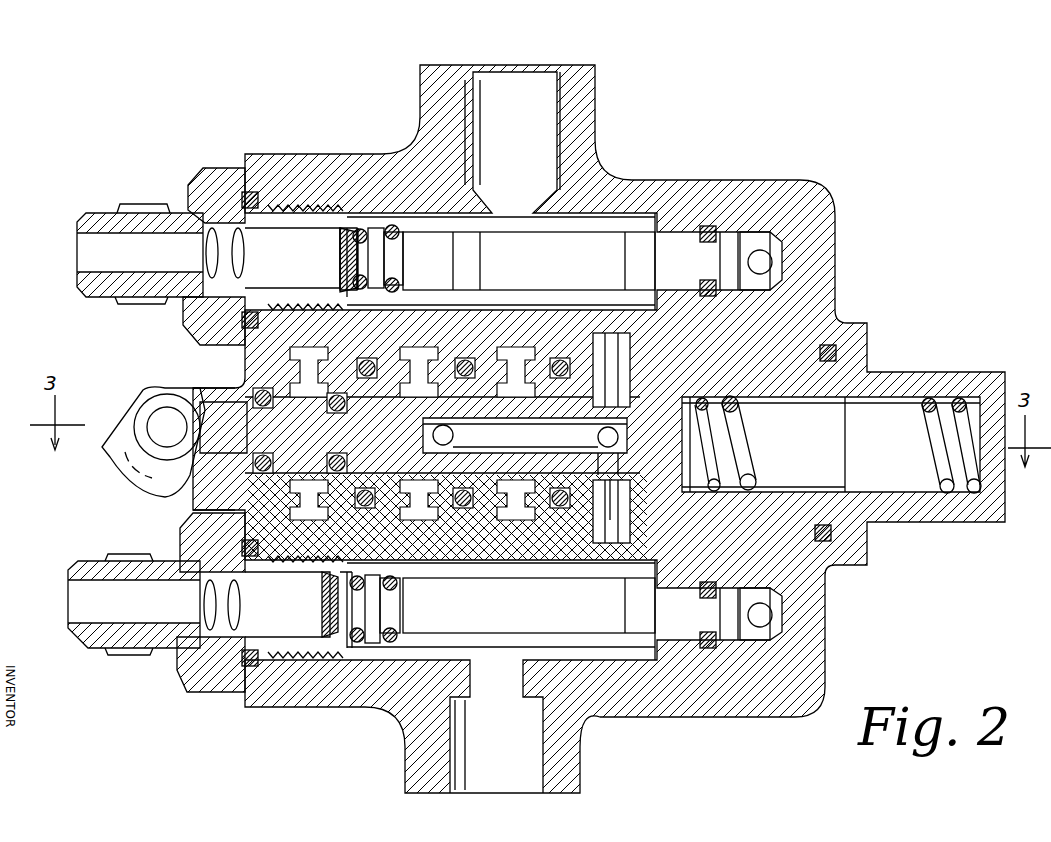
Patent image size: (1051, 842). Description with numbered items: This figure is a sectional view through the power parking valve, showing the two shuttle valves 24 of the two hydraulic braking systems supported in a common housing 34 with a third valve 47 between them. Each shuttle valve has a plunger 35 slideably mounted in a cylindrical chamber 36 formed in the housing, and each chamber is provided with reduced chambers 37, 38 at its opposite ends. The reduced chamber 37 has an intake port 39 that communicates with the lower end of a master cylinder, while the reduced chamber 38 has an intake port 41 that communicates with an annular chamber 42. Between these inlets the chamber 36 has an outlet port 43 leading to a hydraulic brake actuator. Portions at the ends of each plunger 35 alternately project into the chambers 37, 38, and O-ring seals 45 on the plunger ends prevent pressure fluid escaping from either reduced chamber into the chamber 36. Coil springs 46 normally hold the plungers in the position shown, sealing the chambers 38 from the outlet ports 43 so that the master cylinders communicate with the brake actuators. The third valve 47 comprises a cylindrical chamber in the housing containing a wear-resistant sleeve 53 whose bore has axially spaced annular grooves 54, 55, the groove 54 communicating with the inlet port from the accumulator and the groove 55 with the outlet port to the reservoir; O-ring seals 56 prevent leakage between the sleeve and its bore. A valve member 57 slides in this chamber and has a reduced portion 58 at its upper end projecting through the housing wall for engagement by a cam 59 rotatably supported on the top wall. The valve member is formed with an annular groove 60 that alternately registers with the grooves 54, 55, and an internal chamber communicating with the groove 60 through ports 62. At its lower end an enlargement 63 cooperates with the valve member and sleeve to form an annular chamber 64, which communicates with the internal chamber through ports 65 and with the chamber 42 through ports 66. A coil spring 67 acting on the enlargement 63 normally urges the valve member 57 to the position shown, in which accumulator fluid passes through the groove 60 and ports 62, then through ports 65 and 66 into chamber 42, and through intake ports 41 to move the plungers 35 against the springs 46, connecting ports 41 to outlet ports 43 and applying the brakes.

The shuttle valve 24 is at (600, 228).
The housing 34 is at (731, 190).
The plunger 35 is at (622, 255).
The cylindrical chamber 36 is at (620, 657).
The reduced chamber 37 is at (316, 237).
The reduced chamber 38 is at (758, 640).
The intake port 39 is at (110, 260).
The intake port 41 is at (770, 262).
The annular chamber 42 is at (600, 578).
The outlet port 43 is at (540, 85).
The O-ring seal 45 is at (392, 232).
The coil spring 46 is at (238, 228).
The third valve 47 is at (906, 358).
The sleeve 53 is at (400, 566).
The annular groove 54 is at (490, 561).
The annular groove 55 is at (555, 563).
The O-ring seal 56 is at (458, 562).
The valve member 57 is at (300, 630).
The reduced portion 58 is at (230, 445).
The cam 59 is at (130, 472).
The annular groove 60 is at (478, 436).
The port 62 is at (453, 434).
The enlargement 63 is at (625, 560).
The annular chamber 64 is at (581, 433).
The port 65 is at (598, 447).
The port 66 is at (612, 500).
The coil spring 67 is at (935, 405).